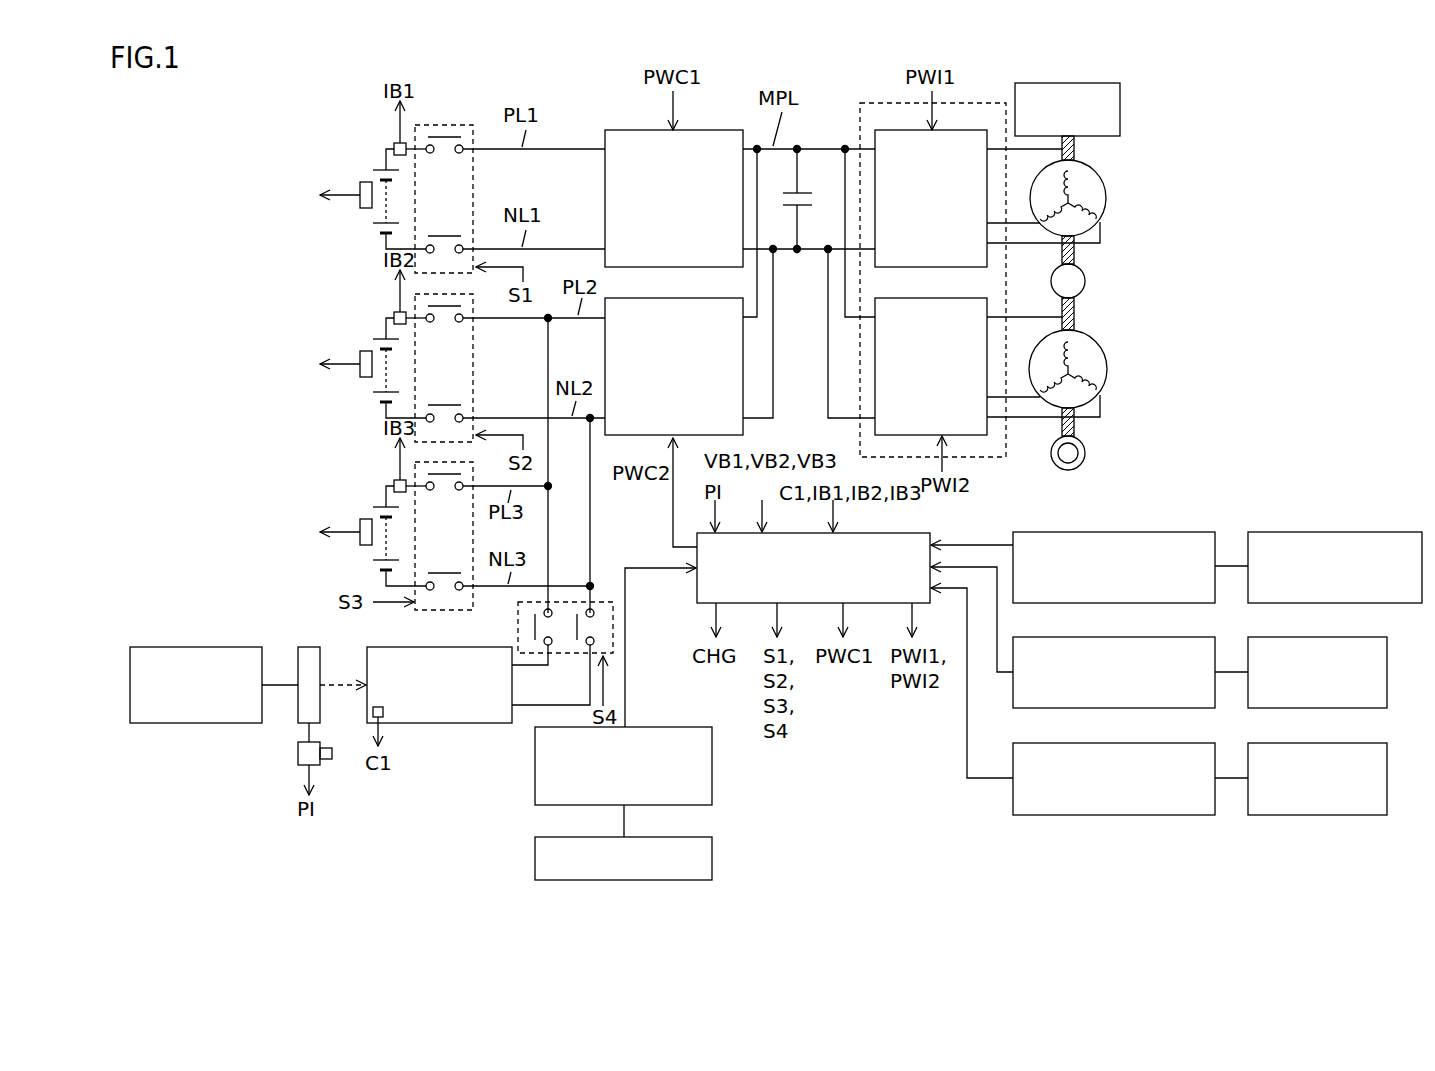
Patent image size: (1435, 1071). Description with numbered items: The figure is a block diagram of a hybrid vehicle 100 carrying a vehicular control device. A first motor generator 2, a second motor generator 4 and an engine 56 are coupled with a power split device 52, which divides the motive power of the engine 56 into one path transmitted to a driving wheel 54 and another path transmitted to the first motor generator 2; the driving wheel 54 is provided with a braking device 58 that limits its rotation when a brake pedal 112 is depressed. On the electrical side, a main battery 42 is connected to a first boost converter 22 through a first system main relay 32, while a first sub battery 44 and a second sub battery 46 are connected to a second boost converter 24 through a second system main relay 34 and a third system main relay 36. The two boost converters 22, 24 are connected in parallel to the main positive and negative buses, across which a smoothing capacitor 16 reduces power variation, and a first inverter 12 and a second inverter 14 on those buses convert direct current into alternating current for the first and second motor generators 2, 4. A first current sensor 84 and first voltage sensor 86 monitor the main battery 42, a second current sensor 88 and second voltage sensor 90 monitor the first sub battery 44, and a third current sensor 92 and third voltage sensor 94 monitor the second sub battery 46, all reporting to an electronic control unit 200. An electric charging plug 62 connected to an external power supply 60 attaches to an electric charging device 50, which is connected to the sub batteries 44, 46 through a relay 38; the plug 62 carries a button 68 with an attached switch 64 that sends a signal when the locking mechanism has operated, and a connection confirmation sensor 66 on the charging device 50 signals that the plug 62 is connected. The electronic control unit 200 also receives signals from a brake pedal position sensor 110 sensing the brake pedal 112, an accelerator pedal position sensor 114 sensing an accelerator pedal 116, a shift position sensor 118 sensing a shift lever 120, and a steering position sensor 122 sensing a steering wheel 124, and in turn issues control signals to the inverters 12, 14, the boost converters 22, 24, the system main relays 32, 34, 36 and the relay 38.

The first motor generator 2 is at (1094, 173).
The second motor generator 4 is at (1094, 340).
The first inverter 12 is at (963, 129).
The second inverter 14 is at (955, 297).
The smoothing capacitor 16 is at (813, 184).
The first boost converter 22 is at (705, 129).
The second boost converter 24 is at (705, 297).
The first system main relay 32 is at (445, 125).
The second system main relay 34 is at (471, 368).
The third system main relay 36 is at (471, 536).
The relay 38 is at (518, 616).
The main battery 42 is at (368, 166).
The first sub battery 44 is at (374, 352).
The second sub battery 46 is at (374, 520).
The electric charging device 50 is at (402, 646).
The power split device 52 is at (1086, 281).
The driving wheel 54 is at (1086, 453).
The engine 56 is at (1120, 93).
The braking device 58 is at (1080, 444).
The external power supply 60 is at (203, 646).
The electric charging plug 62 is at (295, 695).
The switch 64 is at (298, 753).
The connection confirmation sensor 66 is at (372, 712).
The button 68 is at (333, 754).
The first current sensor 84 is at (394, 143).
The first voltage sensor 86 is at (360, 212).
The second current sensor 88 is at (389, 300).
The second voltage sensor 90 is at (322, 386).
The third current sensor 92 is at (389, 468).
The third voltage sensor 94 is at (322, 554).
The vehicle 100 is at (1188, 127).
The brake pedal position sensor 110 is at (661, 726).
The brake pedal 112 is at (661, 836).
The accelerator pedal position sensor 114 is at (1160, 531).
The accelerator pedal 116 is at (1367, 531).
The shift position sensor 118 is at (1160, 636).
The shift lever 120 is at (1335, 636).
The steering position sensor 122 is at (1160, 742).
The steering wheel 124 is at (1335, 742).
The electronic control unit 200 is at (882, 532).